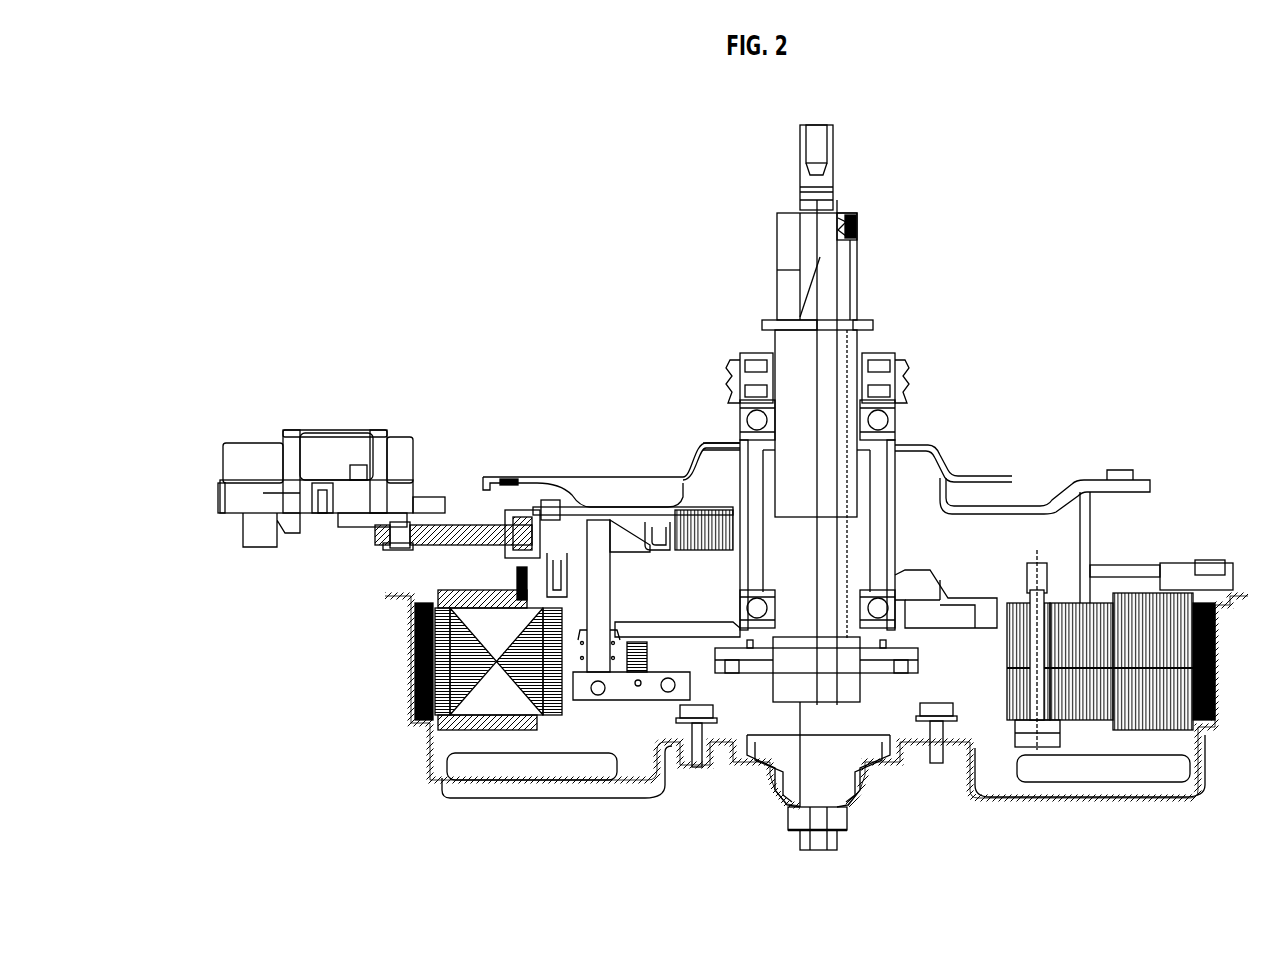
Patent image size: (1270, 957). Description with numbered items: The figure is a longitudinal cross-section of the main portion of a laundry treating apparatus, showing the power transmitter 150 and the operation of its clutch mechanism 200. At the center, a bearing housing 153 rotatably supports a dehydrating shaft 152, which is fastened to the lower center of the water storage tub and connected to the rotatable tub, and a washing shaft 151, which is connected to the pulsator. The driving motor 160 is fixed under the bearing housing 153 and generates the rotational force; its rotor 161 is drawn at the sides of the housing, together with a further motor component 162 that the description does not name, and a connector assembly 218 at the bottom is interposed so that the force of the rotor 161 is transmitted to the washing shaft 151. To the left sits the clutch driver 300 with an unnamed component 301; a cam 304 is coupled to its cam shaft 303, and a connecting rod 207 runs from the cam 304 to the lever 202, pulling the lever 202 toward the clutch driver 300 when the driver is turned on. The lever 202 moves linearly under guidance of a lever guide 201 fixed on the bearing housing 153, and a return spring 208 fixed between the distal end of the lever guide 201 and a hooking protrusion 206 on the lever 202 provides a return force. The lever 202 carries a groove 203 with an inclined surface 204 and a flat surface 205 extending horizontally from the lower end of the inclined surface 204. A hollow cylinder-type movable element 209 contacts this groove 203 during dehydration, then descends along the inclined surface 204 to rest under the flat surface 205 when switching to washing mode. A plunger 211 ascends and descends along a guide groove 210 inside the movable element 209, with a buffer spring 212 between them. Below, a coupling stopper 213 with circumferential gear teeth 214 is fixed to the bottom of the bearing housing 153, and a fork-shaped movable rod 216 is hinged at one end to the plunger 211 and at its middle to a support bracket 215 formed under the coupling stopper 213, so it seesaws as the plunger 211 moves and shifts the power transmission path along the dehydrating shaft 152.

The clutch mechanism 200 is at (328, 201).
The power transmitter 150 is at (849, 155).
The washing shaft 151 is at (830, 183).
The dehydrating shaft 152 is at (850, 226).
The bearing housing 153 is at (1004, 600).
The driving motor 160 is at (495, 806).
The rotor 161 is at (430, 780).
The stator coil 162 is at (410, 690).
The lever guide 201 is at (713, 550).
The lever 202 is at (530, 400).
The groove 203 is at (520, 512).
The inclined surface 204 is at (577, 530).
The flat surface 205 is at (627, 550).
The hooking protrusion 206 is at (663, 550).
The connecting rod 207 is at (378, 545).
The return spring 208 is at (690, 530).
The movable element 209 is at (517, 581).
The guide groove 210 is at (597, 580).
The plunger 211 is at (594, 703).
The buffer spring 212 is at (590, 675).
The coupling stopper 213 is at (724, 575).
The gear teeth 214 is at (913, 622).
The support bracket 215 is at (686, 660).
The movable rod 216 is at (638, 676).
The connector assembly 218 is at (878, 795).
The clutch driver 300 is at (291, 426).
The actuator body 301 is at (240, 444).
The cam shaft 303 is at (395, 551).
The cam 304 is at (347, 513).